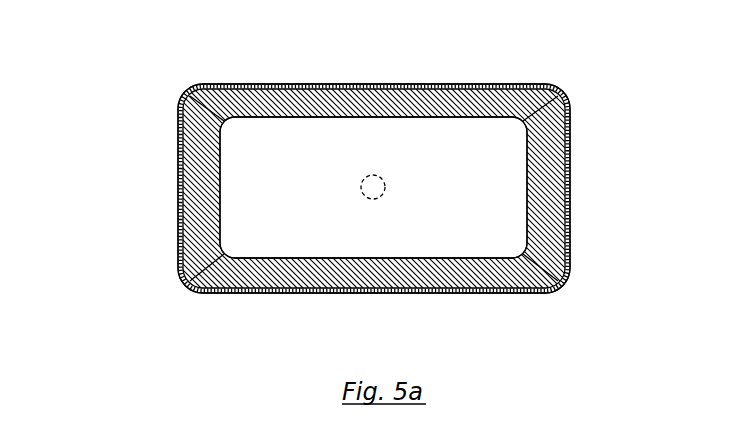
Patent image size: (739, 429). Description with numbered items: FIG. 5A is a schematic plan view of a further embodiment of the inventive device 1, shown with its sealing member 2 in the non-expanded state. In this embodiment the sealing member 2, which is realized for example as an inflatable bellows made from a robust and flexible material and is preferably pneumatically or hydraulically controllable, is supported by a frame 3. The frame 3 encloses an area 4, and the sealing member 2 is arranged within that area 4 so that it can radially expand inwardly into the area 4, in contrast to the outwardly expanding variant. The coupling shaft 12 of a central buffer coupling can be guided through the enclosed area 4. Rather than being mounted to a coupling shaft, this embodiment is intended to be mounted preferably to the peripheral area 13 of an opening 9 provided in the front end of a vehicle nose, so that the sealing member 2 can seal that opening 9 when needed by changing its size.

The device 1 is at (646, 108).
The sealing member 2 is at (392, 87).
The frame 3 is at (300, 87).
The area 4 is at (428, 176).
The opening 9 is at (230, 182).
The coupling shaft 12 is at (367, 190).
The peripheral area 13 is at (177, 132).